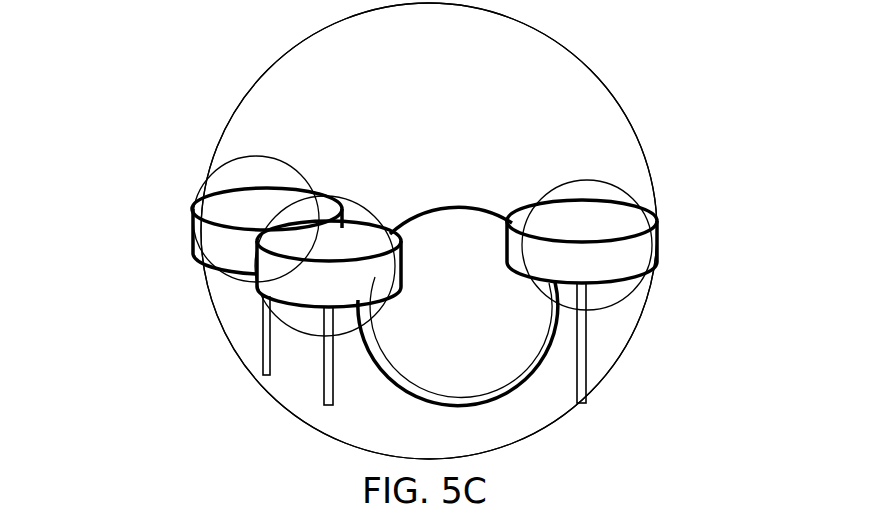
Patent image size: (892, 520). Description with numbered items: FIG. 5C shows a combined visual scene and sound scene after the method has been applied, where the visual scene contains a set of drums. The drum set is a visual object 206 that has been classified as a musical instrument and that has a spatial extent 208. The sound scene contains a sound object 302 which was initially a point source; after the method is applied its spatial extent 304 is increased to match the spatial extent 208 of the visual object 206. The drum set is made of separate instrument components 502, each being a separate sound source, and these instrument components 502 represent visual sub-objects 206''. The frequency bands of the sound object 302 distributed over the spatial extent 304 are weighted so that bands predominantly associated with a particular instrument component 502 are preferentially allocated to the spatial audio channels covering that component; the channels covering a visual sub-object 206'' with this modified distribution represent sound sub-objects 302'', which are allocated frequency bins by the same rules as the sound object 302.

The sound object 302 is at (449, 231).
The spatial extent 304 is at (642, 149).
The visual object 206 is at (656, 245).
The spatial extent 208 is at (684, 278).
The visual sub-object 206'' is at (418, 305).
The sound sub-object 302'' is at (419, 336).
The instrument component 502 is at (337, 173).